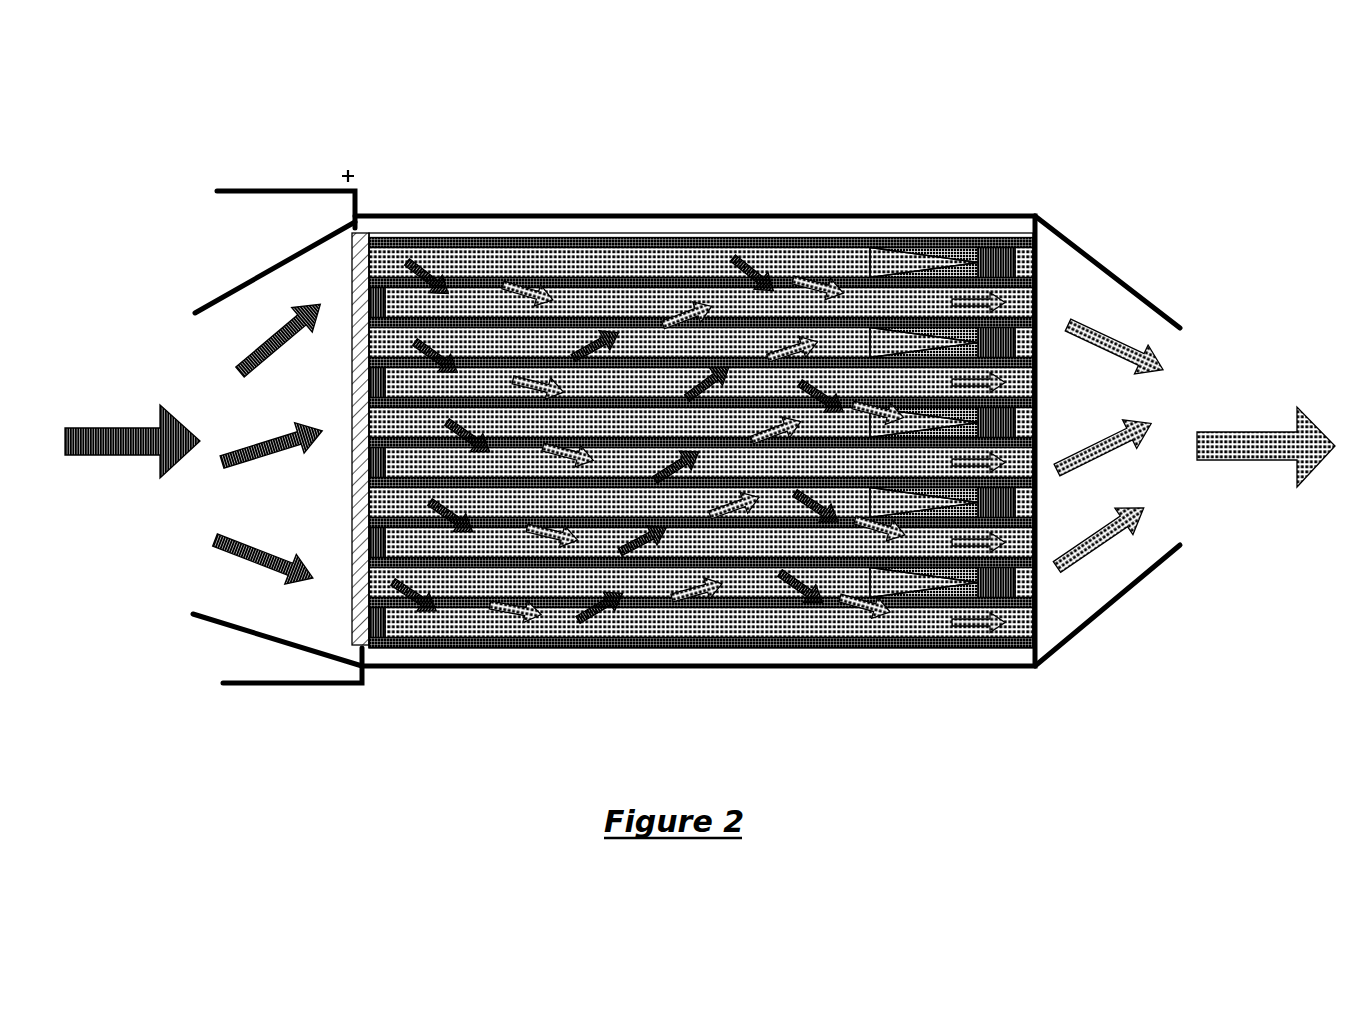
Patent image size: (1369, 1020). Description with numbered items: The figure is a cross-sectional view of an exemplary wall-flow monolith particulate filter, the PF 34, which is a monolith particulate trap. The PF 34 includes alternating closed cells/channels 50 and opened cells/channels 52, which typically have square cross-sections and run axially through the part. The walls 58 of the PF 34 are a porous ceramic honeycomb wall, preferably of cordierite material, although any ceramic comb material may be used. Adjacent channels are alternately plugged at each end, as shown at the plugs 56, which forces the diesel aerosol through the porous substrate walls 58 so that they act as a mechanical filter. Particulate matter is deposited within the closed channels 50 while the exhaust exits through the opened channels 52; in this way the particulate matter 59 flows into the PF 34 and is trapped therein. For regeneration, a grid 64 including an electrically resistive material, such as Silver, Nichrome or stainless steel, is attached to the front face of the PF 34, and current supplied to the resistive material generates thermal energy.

The particulate filter 34 is at (672, 98).
The closed cells/channels 50 is at (872, 337).
The opened cells/channels 52 is at (758, 535).
The plugs 56 is at (1028, 337).
The walls 58 is at (662, 280).
The particulate matter 59 is at (998, 252).
The grid 64 is at (352, 340).